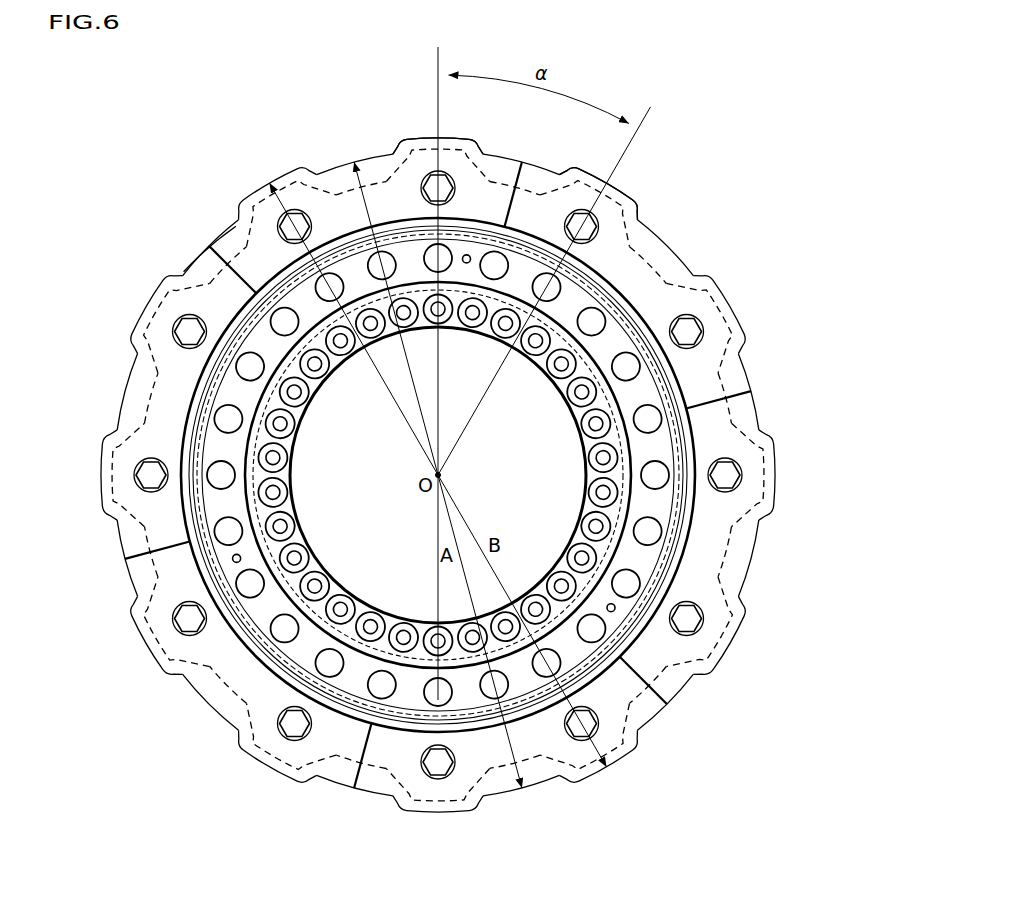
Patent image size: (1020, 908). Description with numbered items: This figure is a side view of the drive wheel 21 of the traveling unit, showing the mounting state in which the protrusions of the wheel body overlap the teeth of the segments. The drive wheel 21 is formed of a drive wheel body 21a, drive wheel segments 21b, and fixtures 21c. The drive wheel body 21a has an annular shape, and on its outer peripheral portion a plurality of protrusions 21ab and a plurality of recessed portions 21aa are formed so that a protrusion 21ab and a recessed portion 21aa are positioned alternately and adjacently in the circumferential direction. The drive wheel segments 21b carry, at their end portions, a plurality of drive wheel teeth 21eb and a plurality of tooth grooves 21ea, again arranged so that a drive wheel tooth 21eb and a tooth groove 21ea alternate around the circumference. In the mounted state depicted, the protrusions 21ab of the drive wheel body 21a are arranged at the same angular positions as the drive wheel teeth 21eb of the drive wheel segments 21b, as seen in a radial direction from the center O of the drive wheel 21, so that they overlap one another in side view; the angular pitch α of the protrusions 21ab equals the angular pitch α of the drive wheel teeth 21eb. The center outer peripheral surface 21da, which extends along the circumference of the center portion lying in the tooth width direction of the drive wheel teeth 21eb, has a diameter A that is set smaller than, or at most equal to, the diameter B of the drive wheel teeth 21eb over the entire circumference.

The drive wheel 21 is at (840, 408).
The drive wheel body 21a is at (700, 552).
The drive wheel segments 21b is at (712, 372).
The fixtures 21c is at (723, 475).
The recessed portions 21aa is at (534, 190).
The protrusions 21ab is at (423, 150).
The center outer peripheral surface 21da is at (187, 265).
The tooth grooves 21ea is at (493, 153).
The drive wheel teeth 21eb is at (410, 138).